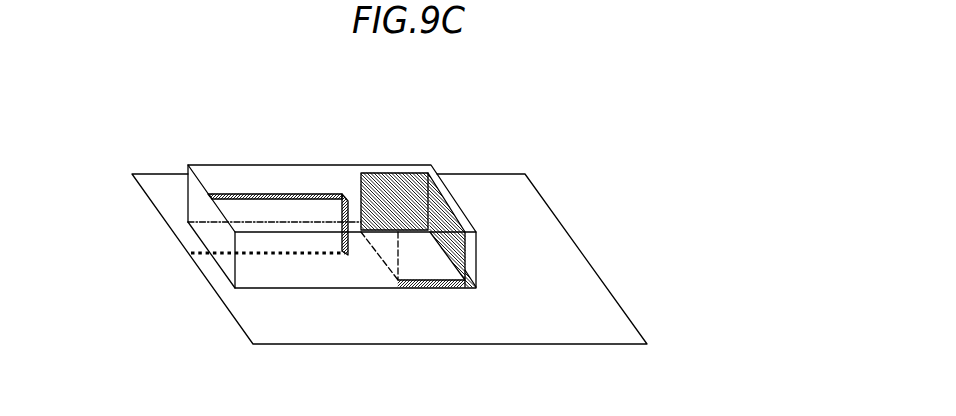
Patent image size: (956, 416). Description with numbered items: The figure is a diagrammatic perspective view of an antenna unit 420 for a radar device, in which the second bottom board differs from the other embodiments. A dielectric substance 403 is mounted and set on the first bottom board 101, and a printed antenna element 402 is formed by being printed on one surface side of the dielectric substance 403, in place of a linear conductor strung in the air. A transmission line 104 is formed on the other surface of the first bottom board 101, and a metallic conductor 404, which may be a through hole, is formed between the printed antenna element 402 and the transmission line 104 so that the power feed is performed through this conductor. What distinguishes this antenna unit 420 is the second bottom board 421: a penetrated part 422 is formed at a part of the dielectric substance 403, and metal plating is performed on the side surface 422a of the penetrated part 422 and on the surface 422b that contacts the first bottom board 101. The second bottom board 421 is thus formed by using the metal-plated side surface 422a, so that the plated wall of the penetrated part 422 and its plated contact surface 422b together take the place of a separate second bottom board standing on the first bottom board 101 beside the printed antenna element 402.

The first bottom board 101 is at (597, 303).
The transmission line 104 is at (260, 256).
The printed antenna element 402 is at (301, 262).
The dielectric substance 403 is at (217, 240).
The metallic conductor 404 is at (348, 243).
The antenna unit 420 is at (279, 173).
The second bottom board 421 is at (504, 248).
The penetrated part 422 is at (428, 230).
The side surface 422a is at (398, 226).
The surface contacting with the first bottom board 422b is at (464, 287).